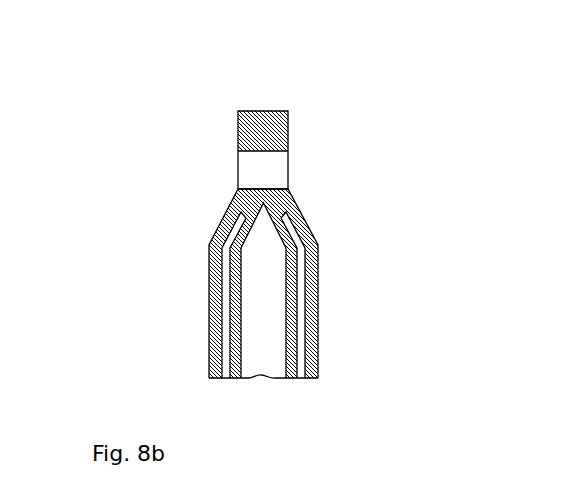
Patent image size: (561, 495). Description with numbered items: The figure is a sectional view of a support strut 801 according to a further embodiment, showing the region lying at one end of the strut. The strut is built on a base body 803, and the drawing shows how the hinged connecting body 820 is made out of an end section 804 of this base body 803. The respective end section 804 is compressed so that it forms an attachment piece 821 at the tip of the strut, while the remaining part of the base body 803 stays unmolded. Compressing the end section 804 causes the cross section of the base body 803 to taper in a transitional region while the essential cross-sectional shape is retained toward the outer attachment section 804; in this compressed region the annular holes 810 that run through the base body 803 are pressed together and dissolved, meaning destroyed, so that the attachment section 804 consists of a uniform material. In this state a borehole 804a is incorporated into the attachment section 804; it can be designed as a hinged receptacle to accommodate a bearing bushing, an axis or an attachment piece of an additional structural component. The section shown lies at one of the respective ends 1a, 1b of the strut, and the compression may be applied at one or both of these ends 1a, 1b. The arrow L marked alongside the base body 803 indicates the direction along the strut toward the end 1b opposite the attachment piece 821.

The support strut 801 is at (274, 235).
The attachment piece 821 is at (288, 130).
The hinged connecting body 820 is at (309, 152).
The end section 804 is at (319, 188).
The borehole 804a is at (247, 170).
The base body 803 is at (318, 367).
The annular holes 810 is at (305, 368).
The end 1a is at (176, 136).
The end 1b is at (268, 378).
The longitudinal direction L is at (325, 278).